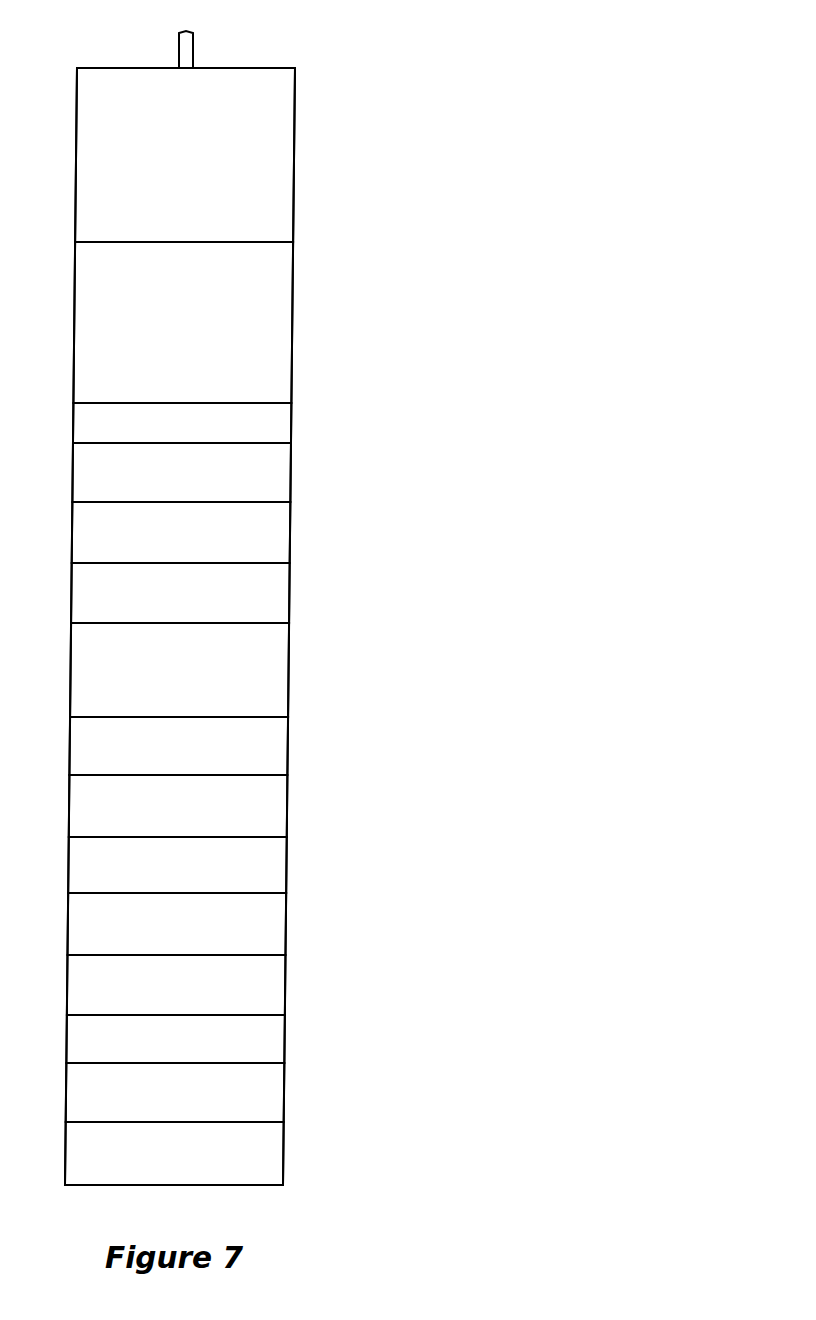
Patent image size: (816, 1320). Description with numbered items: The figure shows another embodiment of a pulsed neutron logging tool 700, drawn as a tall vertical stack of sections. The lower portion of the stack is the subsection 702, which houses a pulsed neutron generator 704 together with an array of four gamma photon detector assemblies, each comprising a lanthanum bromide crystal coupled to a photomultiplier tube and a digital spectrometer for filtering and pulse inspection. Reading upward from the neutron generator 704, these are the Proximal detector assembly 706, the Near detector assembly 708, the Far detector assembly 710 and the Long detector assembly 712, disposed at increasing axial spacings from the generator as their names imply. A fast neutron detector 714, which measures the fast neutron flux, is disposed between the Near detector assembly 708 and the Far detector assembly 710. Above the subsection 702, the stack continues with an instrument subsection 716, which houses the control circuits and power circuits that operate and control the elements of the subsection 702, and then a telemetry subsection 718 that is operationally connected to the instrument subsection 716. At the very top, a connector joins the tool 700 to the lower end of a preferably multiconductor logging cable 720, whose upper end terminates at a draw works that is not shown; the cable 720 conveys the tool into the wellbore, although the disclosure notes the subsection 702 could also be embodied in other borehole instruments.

The PN logging tool 700 is at (318, 120).
The subsection 702 is at (325, 683).
The pulsed neutron generator 704 is at (247, 1107).
The Proximal detector assembly 706 is at (257, 1000).
The Near detector assembly 708 is at (257, 877).
The Far detector assembly 710 is at (252, 597).
The Long detector assembly 712 is at (258, 480).
The fast neutron detector 714 is at (258, 767).
The instrument subsection 716 is at (248, 377).
The telemetry subsection 718 is at (248, 232).
The logging cable 720 is at (187, 53).